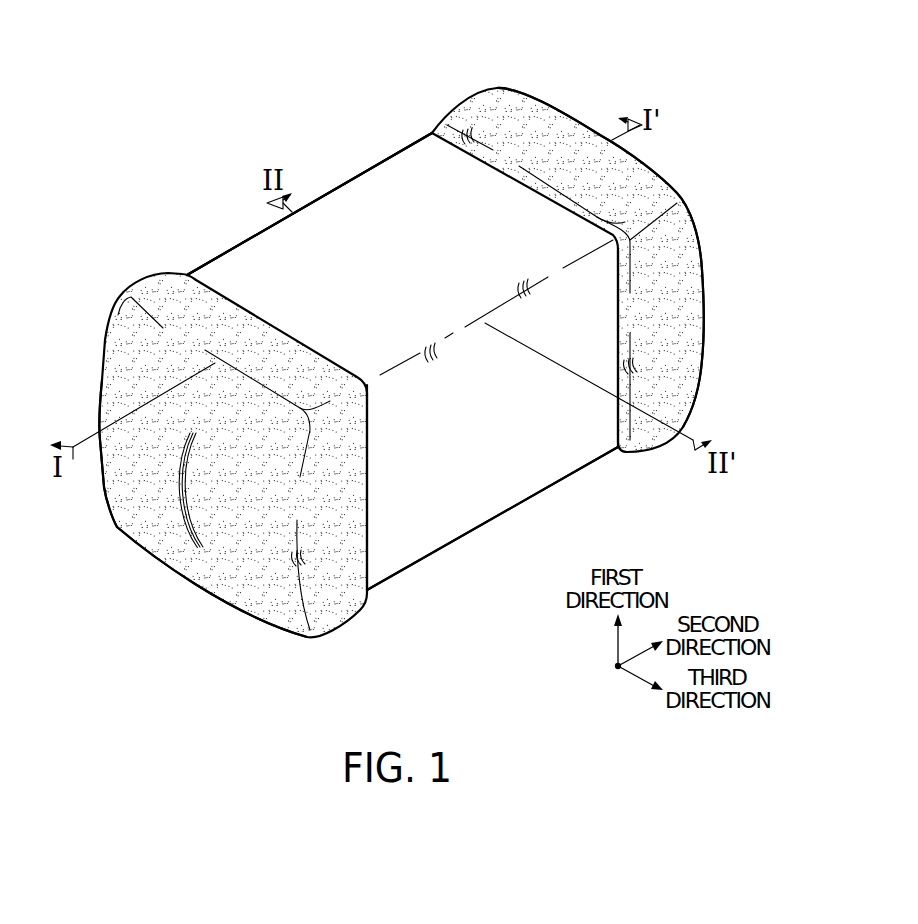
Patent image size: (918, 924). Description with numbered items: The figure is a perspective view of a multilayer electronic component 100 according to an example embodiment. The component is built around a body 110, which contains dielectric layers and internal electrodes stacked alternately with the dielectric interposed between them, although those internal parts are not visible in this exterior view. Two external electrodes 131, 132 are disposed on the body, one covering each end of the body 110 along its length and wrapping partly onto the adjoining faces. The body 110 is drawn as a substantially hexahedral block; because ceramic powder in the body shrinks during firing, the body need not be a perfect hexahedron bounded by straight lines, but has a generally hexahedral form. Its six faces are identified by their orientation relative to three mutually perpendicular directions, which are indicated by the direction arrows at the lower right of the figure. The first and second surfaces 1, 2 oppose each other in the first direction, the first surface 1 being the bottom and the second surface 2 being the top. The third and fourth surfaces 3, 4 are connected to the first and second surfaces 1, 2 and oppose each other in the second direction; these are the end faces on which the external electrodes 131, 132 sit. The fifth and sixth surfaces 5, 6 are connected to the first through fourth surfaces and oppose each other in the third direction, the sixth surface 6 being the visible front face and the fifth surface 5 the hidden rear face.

The multilayer electronic component 100 is at (282, 30).
The body 110 is at (342, 202).
The external electrode 131 is at (151, 287).
The external electrode 132 is at (475, 103).
The first surface 1 is at (460, 550).
The second surface 2 is at (387, 175).
The third surface 3 is at (158, 541).
The fourth surface 4 is at (562, 135).
The fifth surface 5 is at (232, 243).
The sixth surface 6 is at (522, 479).